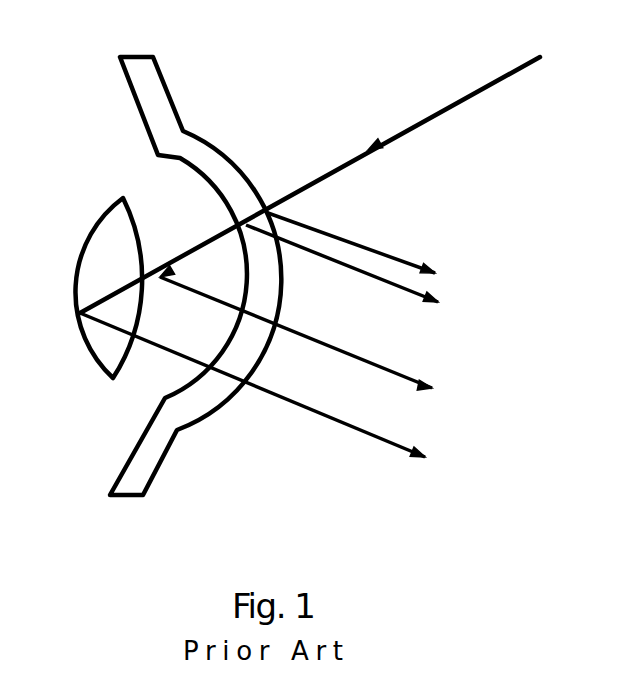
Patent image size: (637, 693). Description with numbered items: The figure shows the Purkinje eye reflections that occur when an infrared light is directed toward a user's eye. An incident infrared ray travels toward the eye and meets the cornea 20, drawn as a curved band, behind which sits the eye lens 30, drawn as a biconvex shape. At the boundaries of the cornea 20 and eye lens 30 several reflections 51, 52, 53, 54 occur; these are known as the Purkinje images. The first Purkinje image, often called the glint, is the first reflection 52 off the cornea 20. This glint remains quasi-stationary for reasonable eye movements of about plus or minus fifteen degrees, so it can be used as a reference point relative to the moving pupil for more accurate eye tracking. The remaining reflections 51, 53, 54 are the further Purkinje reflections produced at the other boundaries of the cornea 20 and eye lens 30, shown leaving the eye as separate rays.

The cornea 20 is at (185, 130).
The eye lens 30 is at (112, 190).
The reflection 51 is at (372, 250).
The first reflection 52 is at (361, 274).
The reflection 53 is at (316, 342).
The reflection 54 is at (272, 394).